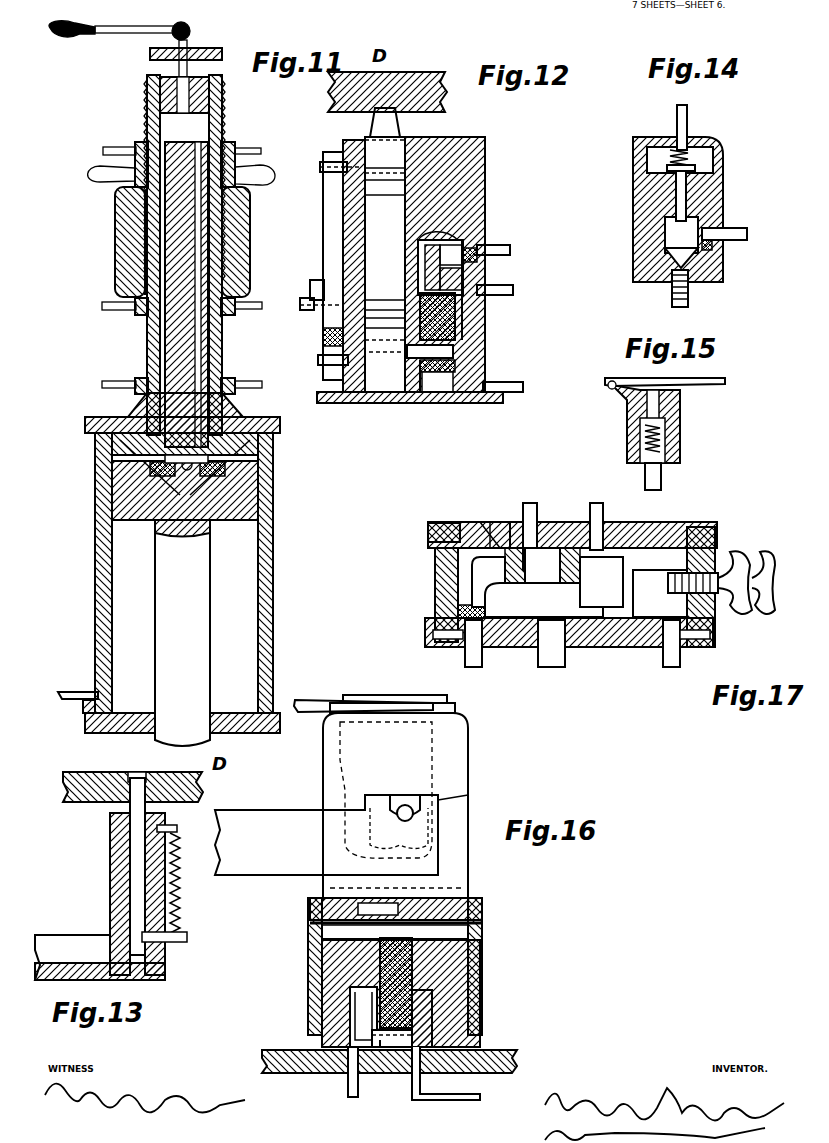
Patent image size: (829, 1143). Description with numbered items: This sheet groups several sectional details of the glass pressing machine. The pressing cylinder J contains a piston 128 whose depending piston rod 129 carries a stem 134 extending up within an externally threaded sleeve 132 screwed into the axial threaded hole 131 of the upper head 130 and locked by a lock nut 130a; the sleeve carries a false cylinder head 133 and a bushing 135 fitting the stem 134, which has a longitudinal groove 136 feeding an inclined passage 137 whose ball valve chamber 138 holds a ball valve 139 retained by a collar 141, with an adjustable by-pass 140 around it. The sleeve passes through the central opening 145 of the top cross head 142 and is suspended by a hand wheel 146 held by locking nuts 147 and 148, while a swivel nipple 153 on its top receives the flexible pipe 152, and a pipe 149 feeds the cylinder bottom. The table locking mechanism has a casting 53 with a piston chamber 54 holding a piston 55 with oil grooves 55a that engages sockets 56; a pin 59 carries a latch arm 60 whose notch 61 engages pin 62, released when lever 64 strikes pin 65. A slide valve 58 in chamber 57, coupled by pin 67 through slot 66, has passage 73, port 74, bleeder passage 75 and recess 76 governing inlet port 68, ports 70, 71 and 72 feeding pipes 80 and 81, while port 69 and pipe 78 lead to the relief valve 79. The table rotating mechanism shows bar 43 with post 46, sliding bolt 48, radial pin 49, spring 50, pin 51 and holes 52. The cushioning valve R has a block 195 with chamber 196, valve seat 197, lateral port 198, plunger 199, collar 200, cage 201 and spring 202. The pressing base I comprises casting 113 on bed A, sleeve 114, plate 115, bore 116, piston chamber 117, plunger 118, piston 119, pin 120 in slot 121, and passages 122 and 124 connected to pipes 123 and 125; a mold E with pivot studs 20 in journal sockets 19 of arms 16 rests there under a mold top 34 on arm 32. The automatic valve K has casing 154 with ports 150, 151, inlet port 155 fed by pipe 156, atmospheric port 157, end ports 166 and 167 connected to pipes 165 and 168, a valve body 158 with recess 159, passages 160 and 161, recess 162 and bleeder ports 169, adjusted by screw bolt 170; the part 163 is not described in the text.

In FIG. 11, the flexible and extendible pipe 152 is at (112, 48).
In FIG. 17, the flexible and extendible pipe 152 is at (510, 525).
In FIG. 11, the swivel nipple 153 is at (150, 58).
In FIG. 11, the locking nut 147 is at (103, 151).
In FIG. 11, the threaded hand wheel 146 is at (90, 174).
In FIG. 11, the top cross head 142 is at (118, 210).
In FIG. 11, the central opening 145 is at (125, 233).
In FIG. 11, the locking nut 148 is at (102, 306).
In FIG. 11, the stem 134 is at (168, 338).
In FIG. 11, the externally threaded sleeve 132 is at (158, 358).
In FIG. 11, the longitudinal groove 136 is at (208, 327).
In FIG. 11, the lock nut 130a is at (240, 368).
In FIG. 11, the adjustable by-pass 140 is at (135, 430).
In FIG. 11, the axial threaded hole 131 is at (238, 408).
In FIG. 11, the upper head of the cylinder 130 is at (270, 426).
In FIG. 11, the bushing 135 is at (112, 458).
In FIG. 11, the collar 141 is at (112, 478).
In FIG. 11, the ball valve 139 is at (100, 503).
In FIG. 11, the false cylinder head 133 is at (230, 460).
In FIG. 11, the inclined passage 137 is at (225, 480).
In FIG. 11, the ball valve chamber 138 is at (235, 495).
In FIG. 11, the piston 128 is at (210, 535).
In FIG. 11, the piston rod 129 is at (182, 633).
In FIG. 11, the pressing cylinder J is at (230, 576).
In FIG. 11, the pipe 149 is at (64, 690).
In FIG. 17, the pipe 149 is at (603, 520).
In FIG. 12, the sockets 56 is at (372, 120).
In FIG. 12, the circumferential oil grooves 55a is at (385, 264).
In FIG. 12, the casting 53 is at (486, 165).
In FIG. 12, the latch arm 60 is at (323, 205).
In FIG. 12, the pin 59 is at (321, 155).
In FIG. 12, the lever 64 is at (316, 280).
In FIG. 12, the pin 65 is at (303, 298).
In FIG. 12, the notch 61 is at (323, 333).
In FIG. 12, the pin 62 is at (335, 362).
In FIG. 12, the piston chamber 54 is at (406, 245).
In FIG. 12, the piston 55 is at (406, 270).
In FIG. 12, the vertical passage 73 is at (420, 285).
In FIG. 12, the recess 76 is at (462, 240).
In FIG. 12, the pressure inlet port 68 is at (470, 250).
In FIG. 12, the port 70 is at (475, 257).
In FIG. 12, the pipe 80 is at (510, 250).
In FIG. 12, the port 71 is at (478, 265).
In FIG. 12, the port 72 is at (485, 278).
In FIG. 12, the pipe 81 is at (513, 290).
In FIG. 14, the pipe 81 is at (690, 300).
In FIG. 12, the diametrical port 74 is at (470, 305).
In FIG. 12, the slide valve 58 is at (458, 326).
In FIG. 12, the bleeder passage 75 is at (412, 336).
In FIG. 12, the port 69 is at (480, 385).
In FIG. 12, the pipe 78 is at (523, 386).
In FIG. 12, the slide valve chamber 57 is at (460, 403).
In FIG. 12, the pin 67 is at (405, 392).
In FIG. 12, the vertical slot 66 is at (424, 392).
In FIG. 14, the cushioning valve R is at (633, 210).
In FIG. 14, the block or casting 195 is at (640, 262).
In FIG. 14, the helical spring 202 is at (690, 150).
In FIG. 14, the cage 201 is at (700, 152).
In FIG. 14, the collar 200 is at (698, 168).
In FIG. 14, the pressure chamber 196 is at (700, 230).
In FIG. 14, the valve seat 197 is at (668, 270).
In FIG. 14, the lateral port 198 is at (725, 248).
In FIG. 14, the plunger 199 is at (720, 258).
In FIG. 15, the pressure relief valve 79 is at (665, 434).
In FIG. 17, the port 150 is at (600, 535).
In FIG. 17, the side wall 163 is at (690, 528).
In FIG. 17, the cylindrical casing 154 is at (525, 647).
In FIG. 17, the automatic valve K is at (525, 650).
In FIG. 17, the transverse passage 160 is at (465, 585).
In FIG. 17, the port 167 is at (460, 608).
In FIG. 17, the bleeder ports 169 is at (580, 588).
In FIG. 17, the recess 159 is at (544, 600).
In FIG. 17, the pressure inlet port 155 is at (544, 580).
In FIG. 17, the transverse passage 161 is at (603, 582).
In FIG. 17, the port 157 is at (560, 522).
In FIG. 17, the recess 162 is at (560, 560).
In FIG. 17, the sliding valve body 158 is at (495, 545).
In FIG. 17, the port 151 is at (505, 560).
In FIG. 17, the pipe 168 is at (466, 660).
In FIG. 17, the pipe 156 is at (565, 660).
In FIG. 17, the port 166 is at (664, 663).
In FIG. 17, the pipe 165 is at (675, 668).
In FIG. 17, the screw bolt 170 is at (715, 570).
In FIG. 16, the mold E is at (395, 806).
In FIG. 16, the mold top 34 is at (388, 696).
In FIG. 16, the horizontal arm 32 is at (308, 692).
In FIG. 16, the arms 16 is at (326, 835).
In FIG. 16, the pivot studs 20 is at (378, 822).
In FIG. 16, the journal sockets 19 is at (466, 791).
In FIG. 16, the circular plate 115 is at (318, 903).
In FIG. 16, the horizontal pin 120 is at (470, 922).
In FIG. 16, the diametric slot 121 is at (460, 935).
In FIG. 16, the axial bore 116 is at (322, 937).
In FIG. 16, the pressing base I is at (508, 951).
In FIG. 16, the circular casting or block 113 is at (330, 962).
In FIG. 16, the cylindrical sleeve 114 is at (330, 988).
In FIG. 16, the plunger 118 is at (412, 968).
In FIG. 16, the piston 119 is at (430, 1010).
In FIG. 16, the passage 124 is at (352, 1015).
In FIG. 16, the passage 122 is at (465, 1040).
In FIG. 16, the bed A is at (262, 1052).
In FIG. 16, the pipe 125 is at (348, 1088).
In FIG. 16, the piston chamber 117 is at (388, 1045).
In FIG. 16, the pipe 123 is at (480, 1097).
In FIG. 13, the holes 52 is at (120, 800).
In FIG. 13, the vertical cylindrical post 46 is at (110, 873).
In FIG. 13, the sliding bolt 48 is at (135, 843).
In FIG. 13, the bar 43 is at (60, 942).
In FIG. 13, the pin 51 is at (172, 830).
In FIG. 13, the helical spring 50 is at (182, 902).
In FIG. 13, the radial pin 49 is at (170, 944).